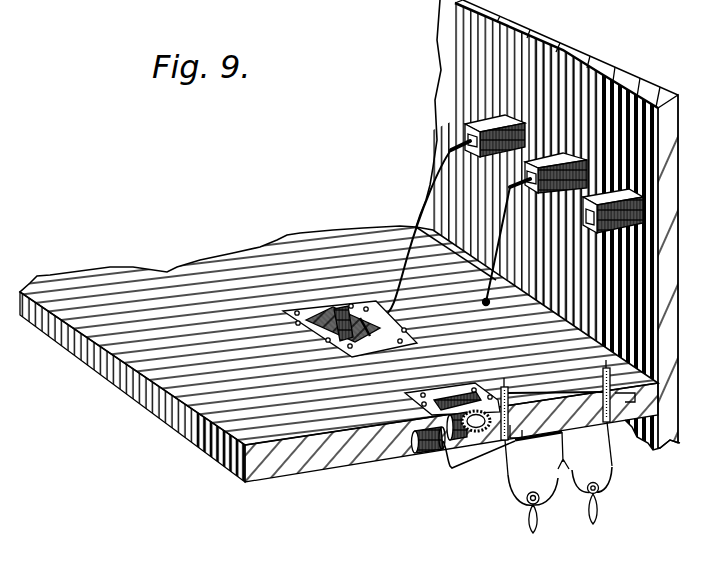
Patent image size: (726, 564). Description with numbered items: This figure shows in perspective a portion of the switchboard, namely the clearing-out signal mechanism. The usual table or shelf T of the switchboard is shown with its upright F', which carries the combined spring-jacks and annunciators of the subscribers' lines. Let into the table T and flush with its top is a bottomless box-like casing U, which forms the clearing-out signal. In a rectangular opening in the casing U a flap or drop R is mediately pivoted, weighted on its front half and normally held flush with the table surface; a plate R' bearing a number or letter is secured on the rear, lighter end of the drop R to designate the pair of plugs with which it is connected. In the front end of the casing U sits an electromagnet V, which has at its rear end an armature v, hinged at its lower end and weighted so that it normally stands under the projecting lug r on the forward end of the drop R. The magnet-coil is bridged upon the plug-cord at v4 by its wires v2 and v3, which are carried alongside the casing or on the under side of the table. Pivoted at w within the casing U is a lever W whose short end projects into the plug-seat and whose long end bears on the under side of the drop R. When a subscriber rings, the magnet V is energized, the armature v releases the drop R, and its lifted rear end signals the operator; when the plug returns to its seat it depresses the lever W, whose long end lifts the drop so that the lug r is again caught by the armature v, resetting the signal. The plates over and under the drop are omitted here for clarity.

The table or shelf T is at (339, 354).
The upright F' is at (558, 225).
The casing U is at (317, 310).
The lever W is at (369, 339).
The pivoted drop R is at (452, 383).
The plate R' is at (474, 385).
The pivot of lever w is at (480, 428).
The armature v is at (461, 431).
The electromagnet V is at (425, 451).
The wire v2 is at (479, 458).
The wire v3 is at (534, 438).
The bridging point on plug-cord v4 is at (566, 436).
The projecting lug r is at (552, 455).
The lever r' is at (619, 413).